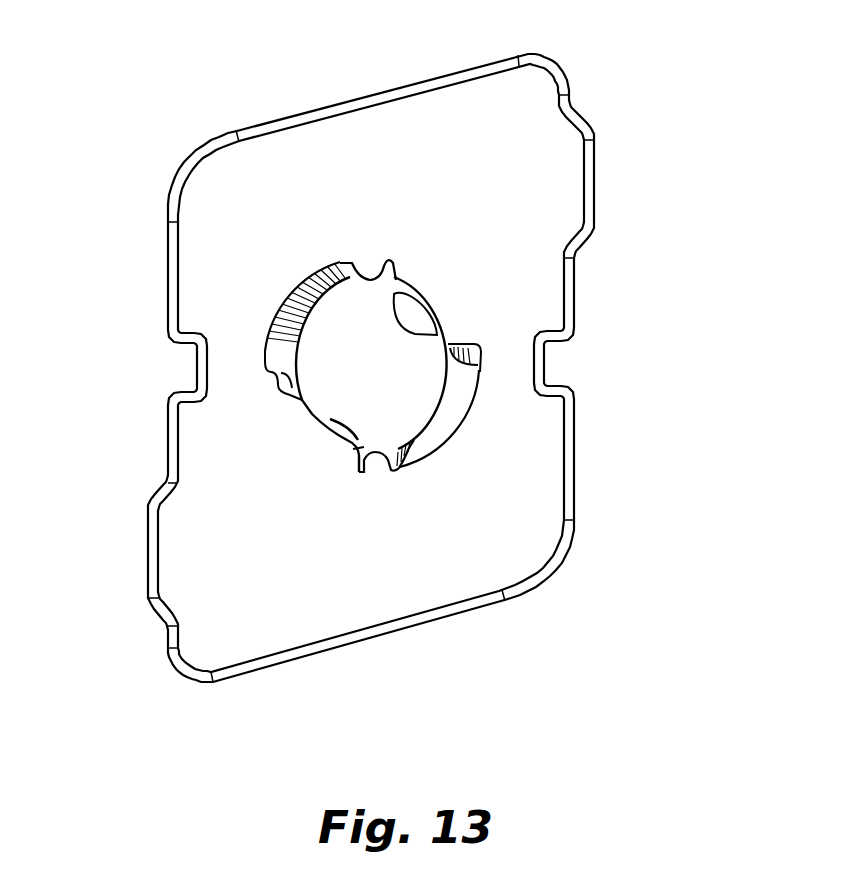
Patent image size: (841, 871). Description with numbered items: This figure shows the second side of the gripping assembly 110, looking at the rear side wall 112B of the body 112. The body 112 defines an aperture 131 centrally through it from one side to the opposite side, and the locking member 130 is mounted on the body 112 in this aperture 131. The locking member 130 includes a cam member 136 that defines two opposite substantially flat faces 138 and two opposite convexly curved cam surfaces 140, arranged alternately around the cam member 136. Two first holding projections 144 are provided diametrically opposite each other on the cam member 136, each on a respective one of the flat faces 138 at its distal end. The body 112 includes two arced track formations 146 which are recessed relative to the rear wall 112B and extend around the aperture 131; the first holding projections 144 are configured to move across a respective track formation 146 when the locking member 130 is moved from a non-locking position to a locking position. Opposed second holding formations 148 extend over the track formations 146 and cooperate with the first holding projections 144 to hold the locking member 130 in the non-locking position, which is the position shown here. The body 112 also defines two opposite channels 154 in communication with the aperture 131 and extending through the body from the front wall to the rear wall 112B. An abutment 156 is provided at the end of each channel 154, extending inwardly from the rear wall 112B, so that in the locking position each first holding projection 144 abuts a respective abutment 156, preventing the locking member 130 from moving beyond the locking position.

The gripping assembly 110 is at (167, 702).
The body 112 is at (230, 112).
The rear side wall 112B is at (297, 603).
The locking member 130 is at (341, 387).
The aperture 131 is at (433, 337).
The cam member 136 is at (397, 383).
The flat faces 138 is at (340, 263).
The cam surfaces 140 is at (445, 416).
The first holding projections 144 is at (380, 290).
The arced track formations 146 is at (282, 310).
The second holding formations 148 is at (372, 265).
The channels 154 is at (464, 379).
The abutments 156 is at (473, 362).